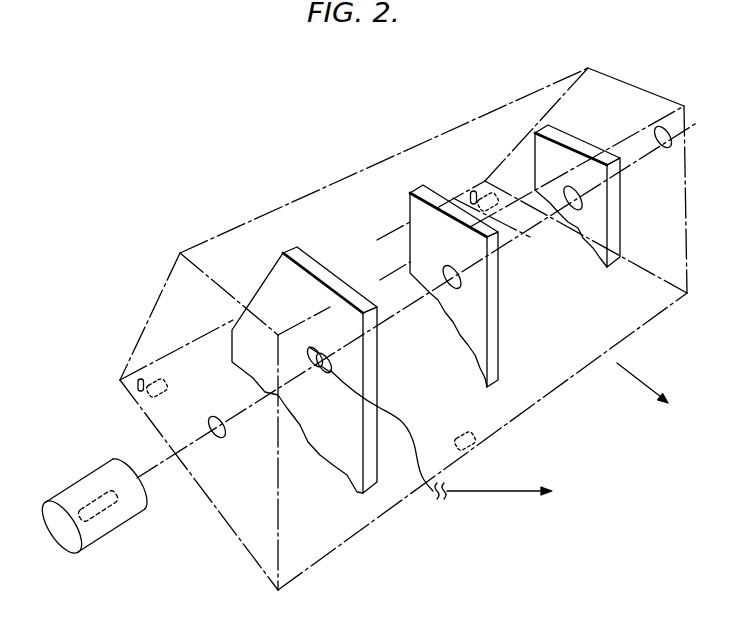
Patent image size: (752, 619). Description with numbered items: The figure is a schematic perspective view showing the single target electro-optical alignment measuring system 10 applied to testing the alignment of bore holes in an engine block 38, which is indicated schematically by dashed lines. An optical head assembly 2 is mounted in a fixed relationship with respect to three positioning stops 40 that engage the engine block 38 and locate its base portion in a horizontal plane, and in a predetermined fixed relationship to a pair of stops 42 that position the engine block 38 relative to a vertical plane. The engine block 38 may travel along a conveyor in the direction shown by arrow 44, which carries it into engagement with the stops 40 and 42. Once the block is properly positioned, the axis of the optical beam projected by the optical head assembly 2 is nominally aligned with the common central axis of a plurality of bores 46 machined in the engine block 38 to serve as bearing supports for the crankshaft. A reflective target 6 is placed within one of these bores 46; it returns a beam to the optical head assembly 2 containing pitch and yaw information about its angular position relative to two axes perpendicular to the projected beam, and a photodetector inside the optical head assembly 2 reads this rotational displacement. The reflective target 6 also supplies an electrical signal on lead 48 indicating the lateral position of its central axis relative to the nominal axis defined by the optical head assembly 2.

The optical head assembly 2 is at (114, 546).
The reflective target 6 is at (318, 384).
The laser lasing element 10 is at (90, 480).
The engine block 38 is at (338, 168).
The positioning stops 40 is at (150, 394).
The pair of stops 42 is at (136, 385).
The arrow 44 is at (641, 381).
The bores 46 is at (223, 437).
The lead 48 is at (405, 418).